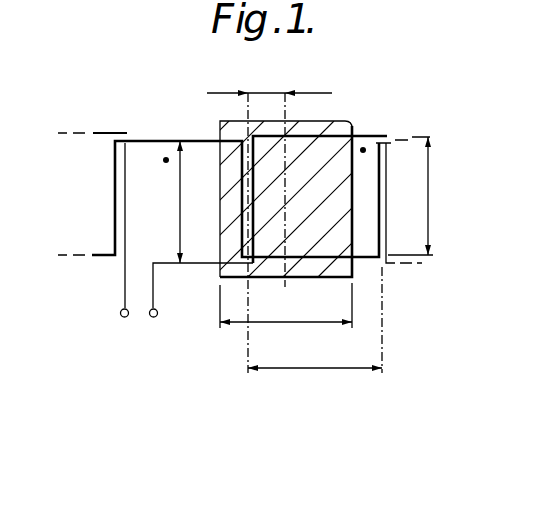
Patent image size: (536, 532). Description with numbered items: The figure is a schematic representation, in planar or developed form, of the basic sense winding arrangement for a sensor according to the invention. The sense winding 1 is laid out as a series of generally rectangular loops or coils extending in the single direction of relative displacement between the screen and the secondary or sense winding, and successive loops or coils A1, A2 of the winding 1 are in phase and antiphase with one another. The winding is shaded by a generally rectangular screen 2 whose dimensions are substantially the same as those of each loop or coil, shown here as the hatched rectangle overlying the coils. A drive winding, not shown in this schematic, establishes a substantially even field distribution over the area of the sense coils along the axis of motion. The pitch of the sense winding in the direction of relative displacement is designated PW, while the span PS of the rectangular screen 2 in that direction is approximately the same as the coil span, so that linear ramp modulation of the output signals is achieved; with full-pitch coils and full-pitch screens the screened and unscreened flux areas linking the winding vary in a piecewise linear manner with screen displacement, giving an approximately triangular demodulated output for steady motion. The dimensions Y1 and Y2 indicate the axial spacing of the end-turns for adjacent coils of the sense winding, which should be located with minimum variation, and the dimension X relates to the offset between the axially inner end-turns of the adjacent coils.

The sense winding 1 is at (336, 136).
The screen 2 is at (220, 121).
The first loop or coil of the winding A1 is at (142, 125).
The second loop or coil of the winding A2 is at (395, 120).
The axially inner end-turn spacing dimension X is at (269, 83).
The end-turn axial spacing dimension Y1 is at (170, 202).
The end-turn axial spacing dimension Y2 is at (440, 196).
The screen span PS is at (286, 305).
The sense winding pitch PW is at (315, 357).